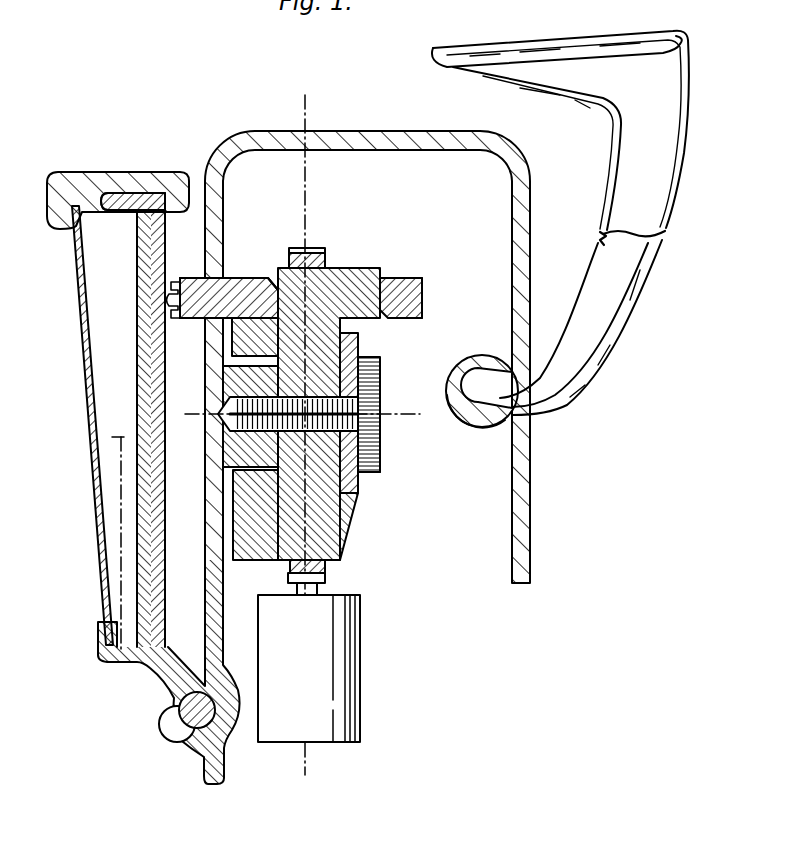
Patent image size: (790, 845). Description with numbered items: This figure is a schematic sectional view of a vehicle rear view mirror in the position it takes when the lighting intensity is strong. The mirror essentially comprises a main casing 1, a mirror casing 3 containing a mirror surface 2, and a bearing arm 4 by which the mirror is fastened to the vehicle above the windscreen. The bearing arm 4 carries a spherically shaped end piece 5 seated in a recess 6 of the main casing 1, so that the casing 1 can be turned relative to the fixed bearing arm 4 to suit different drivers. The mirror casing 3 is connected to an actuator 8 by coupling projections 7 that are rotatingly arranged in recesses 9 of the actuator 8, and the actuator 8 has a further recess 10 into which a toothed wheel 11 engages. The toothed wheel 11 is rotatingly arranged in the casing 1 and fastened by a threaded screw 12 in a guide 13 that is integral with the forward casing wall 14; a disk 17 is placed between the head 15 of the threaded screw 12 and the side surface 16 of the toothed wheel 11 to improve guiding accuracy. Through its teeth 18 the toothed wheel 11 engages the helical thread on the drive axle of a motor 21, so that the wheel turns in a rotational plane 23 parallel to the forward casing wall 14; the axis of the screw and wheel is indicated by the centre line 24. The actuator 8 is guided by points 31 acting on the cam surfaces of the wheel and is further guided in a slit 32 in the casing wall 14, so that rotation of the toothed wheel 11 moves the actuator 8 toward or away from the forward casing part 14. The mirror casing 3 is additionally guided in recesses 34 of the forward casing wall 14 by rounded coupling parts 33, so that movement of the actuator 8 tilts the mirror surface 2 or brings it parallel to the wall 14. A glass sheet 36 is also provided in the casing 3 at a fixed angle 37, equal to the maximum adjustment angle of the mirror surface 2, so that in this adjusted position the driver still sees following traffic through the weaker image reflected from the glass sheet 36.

The main casing 1 is at (407, 138).
The mirror surface 2 is at (137, 350).
The mirror casing 3 is at (156, 200).
The bearing arm 4 is at (657, 147).
The spherically shaped end piece 5 is at (486, 384).
The recess 6 is at (477, 424).
The coupling projections 7 is at (170, 293).
The actuator 8 is at (247, 277).
The recesses 9 is at (190, 320).
The further recess 10 is at (381, 276).
The toothed wheel 11 is at (357, 268).
The threaded screw 12 is at (376, 387).
The guide 13 is at (250, 443).
The forward casing wall 14 is at (212, 624).
The head 15 is at (380, 473).
The side surface 16 is at (347, 527).
The disk 17 is at (367, 340).
The teeth 18 is at (312, 247).
The motor 21 is at (346, 670).
The rotational plane 23 is at (309, 124).
The horizontal axis 24 is at (393, 423).
The points 31 is at (425, 284).
The slit 32 is at (220, 277).
The rounded coupling parts 33 is at (193, 715).
The recesses 34 is at (186, 740).
The glass sheet 36 is at (75, 272).
The fixed angle 37 is at (121, 450).